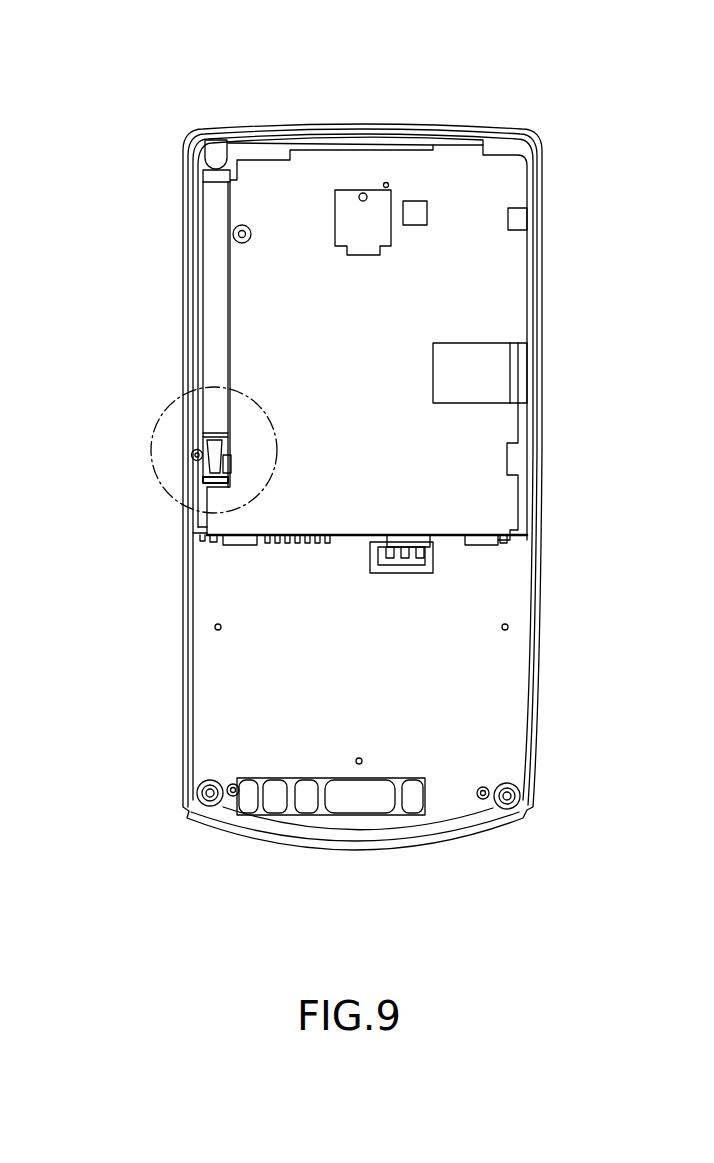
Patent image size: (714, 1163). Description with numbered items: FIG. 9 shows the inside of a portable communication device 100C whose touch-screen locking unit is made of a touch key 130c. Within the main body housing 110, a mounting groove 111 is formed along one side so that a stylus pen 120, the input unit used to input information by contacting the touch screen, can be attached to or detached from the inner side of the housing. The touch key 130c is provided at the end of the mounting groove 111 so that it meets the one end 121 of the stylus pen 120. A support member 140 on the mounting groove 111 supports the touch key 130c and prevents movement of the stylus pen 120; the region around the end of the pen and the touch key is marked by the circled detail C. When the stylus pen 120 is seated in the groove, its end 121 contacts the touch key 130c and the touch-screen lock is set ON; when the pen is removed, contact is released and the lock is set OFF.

The portable communication device 100C is at (392, 52).
The main body housing 110 is at (183, 146).
The mounting groove 111 is at (236, 337).
The stylus pen 120 is at (212, 262).
The one end of the stylus pen 121 is at (207, 470).
The touch key 130c is at (205, 482).
The support member 140 is at (231, 463).
The detail region C is at (158, 418).